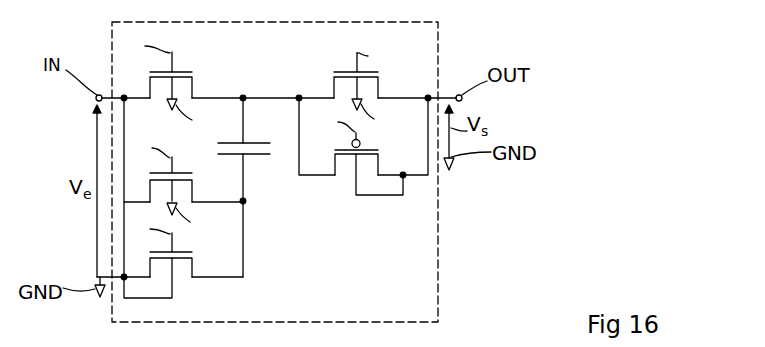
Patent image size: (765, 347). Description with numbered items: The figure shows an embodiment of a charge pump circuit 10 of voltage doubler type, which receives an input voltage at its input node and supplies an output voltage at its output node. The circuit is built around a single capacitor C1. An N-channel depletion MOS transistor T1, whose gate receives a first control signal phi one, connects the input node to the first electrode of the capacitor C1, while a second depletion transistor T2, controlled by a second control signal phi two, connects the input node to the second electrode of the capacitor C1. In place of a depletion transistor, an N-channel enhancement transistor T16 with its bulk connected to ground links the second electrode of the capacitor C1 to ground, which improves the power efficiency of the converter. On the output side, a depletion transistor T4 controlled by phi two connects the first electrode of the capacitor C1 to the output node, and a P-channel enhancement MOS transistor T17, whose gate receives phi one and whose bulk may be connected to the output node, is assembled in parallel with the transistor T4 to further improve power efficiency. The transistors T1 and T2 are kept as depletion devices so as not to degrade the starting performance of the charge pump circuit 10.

The charge pump circuit 10 is at (438, 38).
The N-channel depletion MOS transistor T1 is at (192, 91).
The N-channel depletion MOS transistor T2 is at (192, 192).
The N-channel depletion MOS transistor T4 is at (334, 88).
The N-channel enhancement transistor T16 is at (192, 268).
The P-channel enhancement MOS transistor T17 is at (378, 168).
The capacitor C1 is at (248, 157).